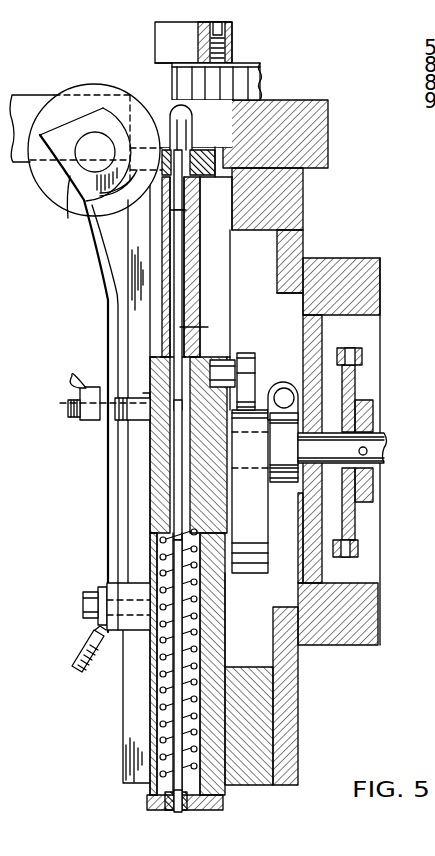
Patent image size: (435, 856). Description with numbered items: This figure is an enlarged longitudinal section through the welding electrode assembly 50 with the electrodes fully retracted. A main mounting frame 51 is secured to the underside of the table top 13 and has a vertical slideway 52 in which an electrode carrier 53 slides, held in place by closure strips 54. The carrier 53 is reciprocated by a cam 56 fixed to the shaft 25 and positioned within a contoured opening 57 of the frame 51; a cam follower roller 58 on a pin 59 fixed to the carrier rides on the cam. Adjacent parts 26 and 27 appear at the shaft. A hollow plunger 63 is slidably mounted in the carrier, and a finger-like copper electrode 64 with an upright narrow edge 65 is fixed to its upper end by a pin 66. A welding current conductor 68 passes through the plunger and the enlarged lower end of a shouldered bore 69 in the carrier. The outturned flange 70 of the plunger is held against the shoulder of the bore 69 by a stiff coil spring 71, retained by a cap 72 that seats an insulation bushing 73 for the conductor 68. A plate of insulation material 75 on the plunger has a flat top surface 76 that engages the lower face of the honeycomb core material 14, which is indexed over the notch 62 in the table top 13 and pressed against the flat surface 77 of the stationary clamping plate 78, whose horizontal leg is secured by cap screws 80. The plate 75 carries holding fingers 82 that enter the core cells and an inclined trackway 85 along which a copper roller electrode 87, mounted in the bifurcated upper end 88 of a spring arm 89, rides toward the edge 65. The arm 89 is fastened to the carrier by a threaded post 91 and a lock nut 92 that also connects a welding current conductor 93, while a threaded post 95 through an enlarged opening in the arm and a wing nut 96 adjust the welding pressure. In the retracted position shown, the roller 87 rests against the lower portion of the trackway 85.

The table top 13 is at (327, 100).
The honeycomb core material 14 is at (260, 60).
The shaft 25 is at (385, 434).
The yoke 26 is at (358, 381).
The nut 27 is at (362, 357).
The welding electrode assembly 50 is at (58, 92).
The main mounting frame 51 is at (300, 685).
The slideway 52 is at (229, 285).
The electrode carrier 53 is at (213, 643).
The closure strips 54 is at (134, 718).
The cam 56 is at (268, 560).
The contoured opening 57 is at (288, 296).
The cam follower roller 58 is at (252, 374).
The pin 59 is at (218, 360).
The notch 62 is at (218, 114).
The hollow plunger 63 is at (203, 272).
The finger-like copper electrode 64 is at (238, 97).
The narrow edge 65 is at (168, 105).
The pin 66 is at (212, 208).
The welding current conductor 68 is at (212, 323).
The shouldered bore 69 is at (200, 480).
The outturned flange 70 is at (158, 539).
The coil spring 71 is at (165, 673).
The cap 72 is at (223, 803).
The insulation bushing 73 is at (165, 807).
The plate of insulation material 75 is at (232, 181).
The flat top surface 76 is at (215, 139).
The flat surface 77 is at (158, 60).
The stationary clamping plate 78 is at (208, 22).
The cap screws 80 is at (218, 22).
The holding fingers 82 is at (128, 96).
The inclined trackway 85 is at (222, 163).
The copper roller electrode 87 is at (48, 200).
The bifurcated upper end 88 is at (76, 190).
The spring arm 89 is at (108, 494).
The threaded post 91 is at (82, 605).
The lock nut 92 is at (96, 592).
The welding current conductor 93 is at (80, 651).
The threaded post 95 is at (68, 410).
The wing nut 96 is at (78, 380).